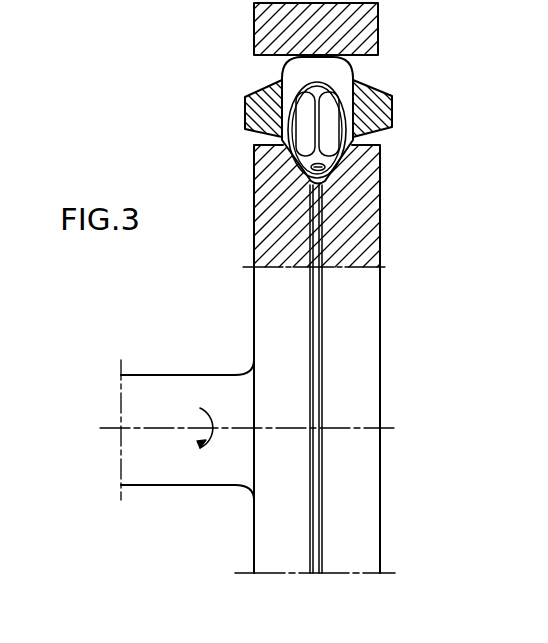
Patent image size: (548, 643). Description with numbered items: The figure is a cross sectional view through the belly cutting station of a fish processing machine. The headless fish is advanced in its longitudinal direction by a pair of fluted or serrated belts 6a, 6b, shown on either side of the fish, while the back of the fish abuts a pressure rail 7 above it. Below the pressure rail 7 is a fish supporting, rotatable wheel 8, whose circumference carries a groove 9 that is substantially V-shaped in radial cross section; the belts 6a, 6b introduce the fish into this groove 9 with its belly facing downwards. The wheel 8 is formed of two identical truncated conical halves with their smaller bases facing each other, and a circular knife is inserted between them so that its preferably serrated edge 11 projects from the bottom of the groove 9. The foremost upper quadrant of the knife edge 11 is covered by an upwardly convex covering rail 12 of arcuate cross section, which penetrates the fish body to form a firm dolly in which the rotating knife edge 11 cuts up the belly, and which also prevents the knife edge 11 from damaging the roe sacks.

The pressure rail 7 is at (379, 35).
The fluted or serrated belt 6a is at (245, 112).
The fluted or serrated belt 6b is at (392, 111).
The fish supporting rotatable wheel 8 is at (380, 356).
The groove 9 is at (280, 155).
The serrated knife edge 11 is at (313, 318).
The covering rail 12 is at (326, 168).